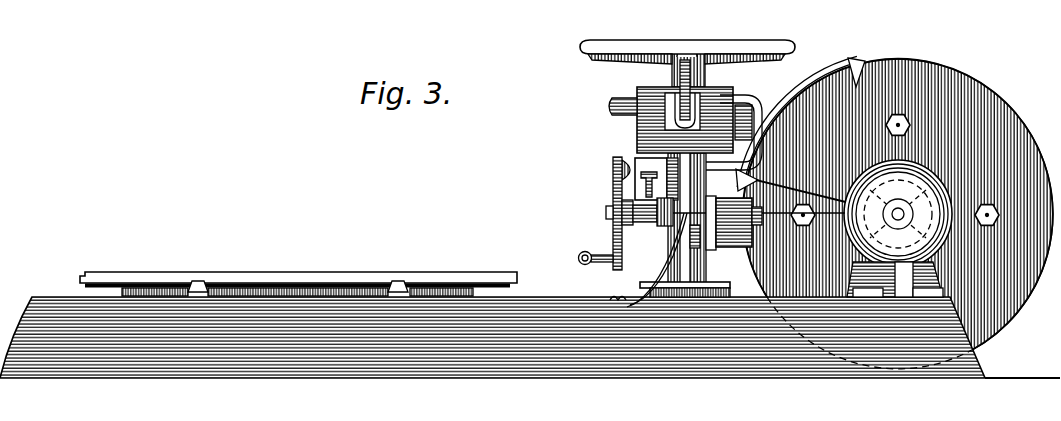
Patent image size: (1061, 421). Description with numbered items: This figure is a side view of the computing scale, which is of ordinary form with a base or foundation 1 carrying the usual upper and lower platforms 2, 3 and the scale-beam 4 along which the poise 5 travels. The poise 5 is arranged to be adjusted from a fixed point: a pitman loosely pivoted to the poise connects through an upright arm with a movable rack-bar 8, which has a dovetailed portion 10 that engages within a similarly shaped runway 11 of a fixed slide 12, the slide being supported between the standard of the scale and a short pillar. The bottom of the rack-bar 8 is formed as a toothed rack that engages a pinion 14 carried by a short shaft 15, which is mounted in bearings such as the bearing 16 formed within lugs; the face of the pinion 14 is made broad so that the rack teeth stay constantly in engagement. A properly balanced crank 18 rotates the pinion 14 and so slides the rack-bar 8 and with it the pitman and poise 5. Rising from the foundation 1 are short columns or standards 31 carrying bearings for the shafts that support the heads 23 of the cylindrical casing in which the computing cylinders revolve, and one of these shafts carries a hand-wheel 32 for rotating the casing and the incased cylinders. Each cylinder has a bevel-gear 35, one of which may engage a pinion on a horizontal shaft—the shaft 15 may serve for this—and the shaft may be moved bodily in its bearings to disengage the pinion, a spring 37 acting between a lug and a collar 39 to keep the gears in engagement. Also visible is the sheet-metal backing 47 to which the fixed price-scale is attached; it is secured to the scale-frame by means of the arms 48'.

The base or foundation 1 is at (531, 312).
The upper platform 2 is at (652, 41).
The lower platform 3 is at (324, 271).
The scale-beam 4 is at (648, 112).
The poise 5 is at (618, 104).
The rack-bar 8 is at (642, 186).
The dovetailed portion 10 is at (650, 178).
The runway 11 is at (658, 166).
The fixed slide 12 is at (676, 170).
The pinion 14 is at (654, 227).
The short shaft 15 is at (616, 217).
The bearing 16 is at (665, 212).
The crank 18 is at (601, 221).
The heads 23 is at (898, 214).
The short columns or standards 31 is at (895, 279).
The hand-wheel 32 is at (898, 205).
The bevel-gear 35 is at (724, 250).
The spring 37 is at (668, 268).
The collar 39 is at (704, 204).
The sheet-metal backing 47 is at (791, 107).
The arms 48' is at (828, 121).